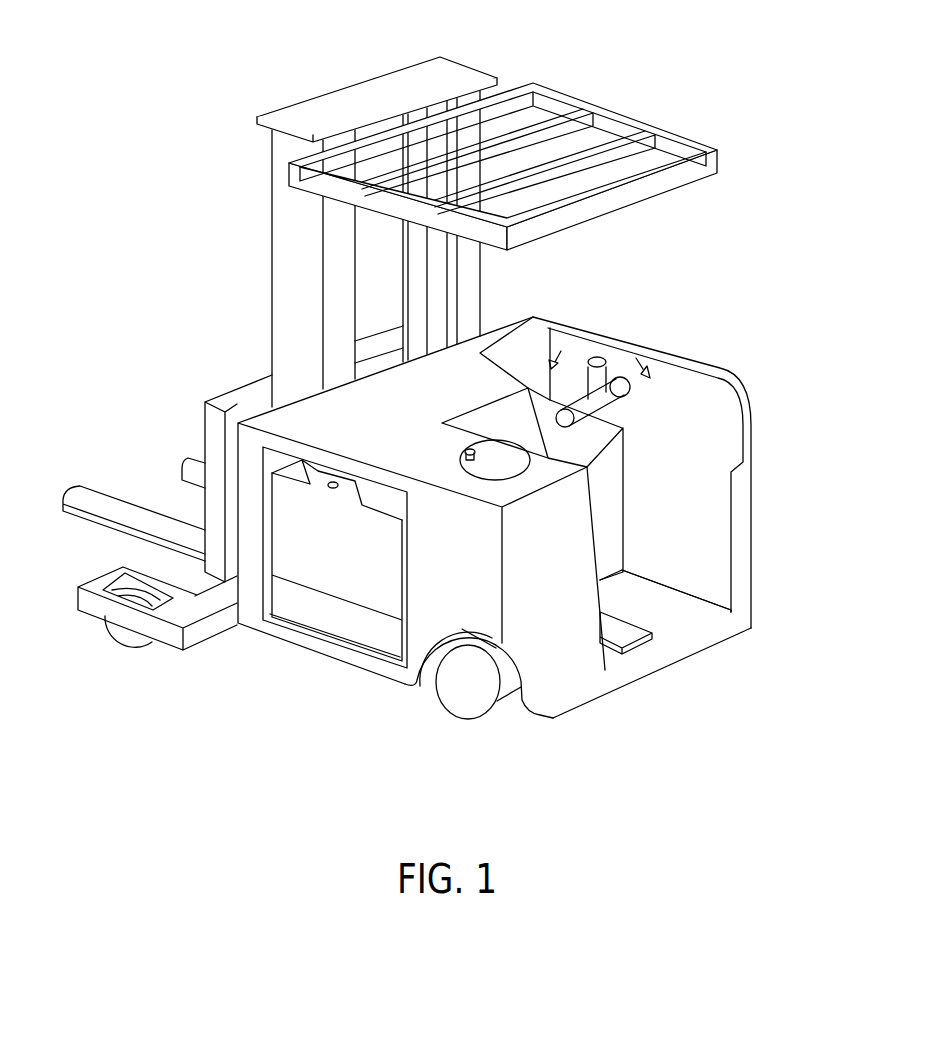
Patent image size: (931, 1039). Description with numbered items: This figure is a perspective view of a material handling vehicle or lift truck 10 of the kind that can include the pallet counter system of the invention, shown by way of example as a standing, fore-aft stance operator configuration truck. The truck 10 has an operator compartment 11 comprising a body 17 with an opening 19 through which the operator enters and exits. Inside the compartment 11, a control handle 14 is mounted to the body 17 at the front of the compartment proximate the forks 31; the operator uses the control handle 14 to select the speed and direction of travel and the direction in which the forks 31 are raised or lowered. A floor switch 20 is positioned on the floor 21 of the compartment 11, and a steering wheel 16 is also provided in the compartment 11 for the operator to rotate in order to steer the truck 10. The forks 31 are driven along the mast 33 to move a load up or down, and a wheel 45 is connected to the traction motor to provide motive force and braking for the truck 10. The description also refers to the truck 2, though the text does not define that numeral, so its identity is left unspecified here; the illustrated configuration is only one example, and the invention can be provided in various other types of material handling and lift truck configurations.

The lift truck 2 is at (668, 645).
The lift truck 10 is at (652, 90).
The operator compartment 11 is at (752, 389).
The control handle 14 is at (611, 360).
The steering wheel 16 is at (463, 464).
The body 17 is at (752, 519).
The opening 19 is at (690, 541).
The floor switch 20 is at (642, 646).
The floor 21 is at (690, 618).
The forks 31 is at (88, 524).
The mast 33 is at (466, 66).
The wheel 45 is at (443, 703).